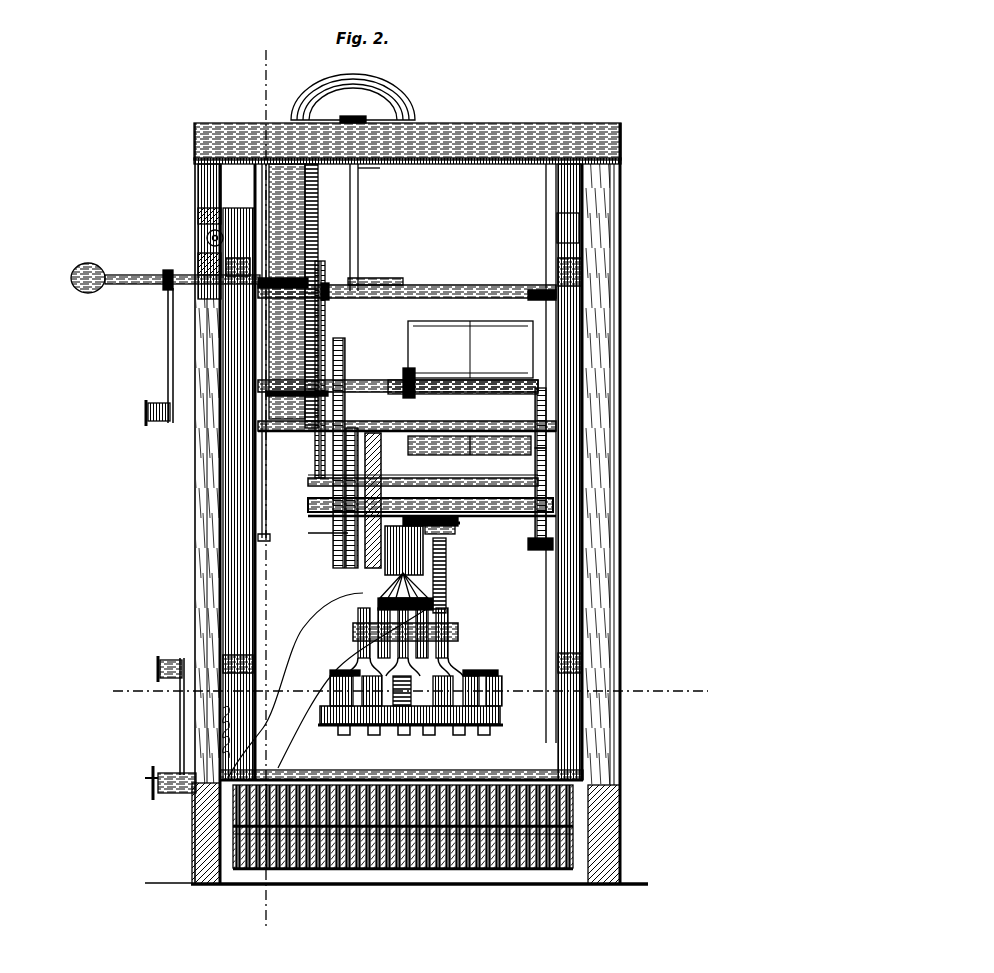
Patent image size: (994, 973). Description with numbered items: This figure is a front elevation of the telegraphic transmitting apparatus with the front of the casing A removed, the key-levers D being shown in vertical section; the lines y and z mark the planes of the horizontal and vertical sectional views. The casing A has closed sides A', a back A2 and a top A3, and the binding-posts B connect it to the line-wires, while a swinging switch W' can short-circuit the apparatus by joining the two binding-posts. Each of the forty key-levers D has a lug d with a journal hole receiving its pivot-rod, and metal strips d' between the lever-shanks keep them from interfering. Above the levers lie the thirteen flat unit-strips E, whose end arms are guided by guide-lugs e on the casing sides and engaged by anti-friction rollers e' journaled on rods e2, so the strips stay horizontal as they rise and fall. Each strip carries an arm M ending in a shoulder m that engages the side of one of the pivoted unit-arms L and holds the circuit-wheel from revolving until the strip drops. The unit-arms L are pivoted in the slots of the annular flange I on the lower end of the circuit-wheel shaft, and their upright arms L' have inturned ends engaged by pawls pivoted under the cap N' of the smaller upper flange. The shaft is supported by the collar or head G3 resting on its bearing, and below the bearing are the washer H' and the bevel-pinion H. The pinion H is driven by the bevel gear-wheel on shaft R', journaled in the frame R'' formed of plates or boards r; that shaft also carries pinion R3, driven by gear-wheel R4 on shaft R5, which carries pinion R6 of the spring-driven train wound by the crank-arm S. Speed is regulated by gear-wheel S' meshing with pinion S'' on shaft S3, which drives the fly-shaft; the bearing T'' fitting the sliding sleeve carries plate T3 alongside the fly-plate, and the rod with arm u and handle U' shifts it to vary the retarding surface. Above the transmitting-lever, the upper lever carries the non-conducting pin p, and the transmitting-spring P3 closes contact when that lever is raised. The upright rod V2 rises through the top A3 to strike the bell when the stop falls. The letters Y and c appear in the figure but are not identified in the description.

The top A3 is at (407, 133).
The casing A is at (396, 503).
The closed sides A' is at (401, 524).
The back A2 is at (407, 453).
The upright rod V2 is at (369, 185).
The bell Y is at (353, 98).
The section line z z is at (262, 490).
The section line y y is at (410, 692).
The handle U' is at (165, 284).
The crank-arm S is at (159, 357).
The anti-friction rollers e' is at (377, 241).
The rods e2 is at (200, 240).
The bearing block c is at (213, 903).
The plates or boards r is at (546, 237).
The pinion R6 is at (300, 240).
The gear-wheel R4 is at (302, 365).
The frame R'' is at (407, 283).
The arm u is at (385, 337).
The plate T3 is at (470, 349).
The bearing T'' is at (398, 386).
The shaft R5 is at (407, 418).
The shaft R' is at (413, 449).
The shaft S3 is at (423, 473).
The collar or head G3 is at (400, 508).
The pinion R3 is at (342, 453).
The pinion S'' is at (536, 499).
The gear-wheel S' is at (343, 567).
The transmitting-spring P3 is at (447, 524).
The washer H' is at (428, 569).
The bevel-pinion H is at (325, 678).
The cap N' is at (402, 640).
The arms L' is at (412, 671).
The unit-arms L is at (404, 713).
The arm M is at (417, 747).
The shoulder or projection m is at (332, 727).
The annular flange I is at (392, 727).
The pin or stud p is at (270, 660).
The unit-strips E is at (275, 606).
The guide-lugs e is at (562, 663).
The swinging switch W' is at (167, 715).
The binding-posts B is at (170, 792).
The key-levers D is at (186, 812).
The extension or lug d is at (403, 850).
The metal strips d' is at (403, 887).